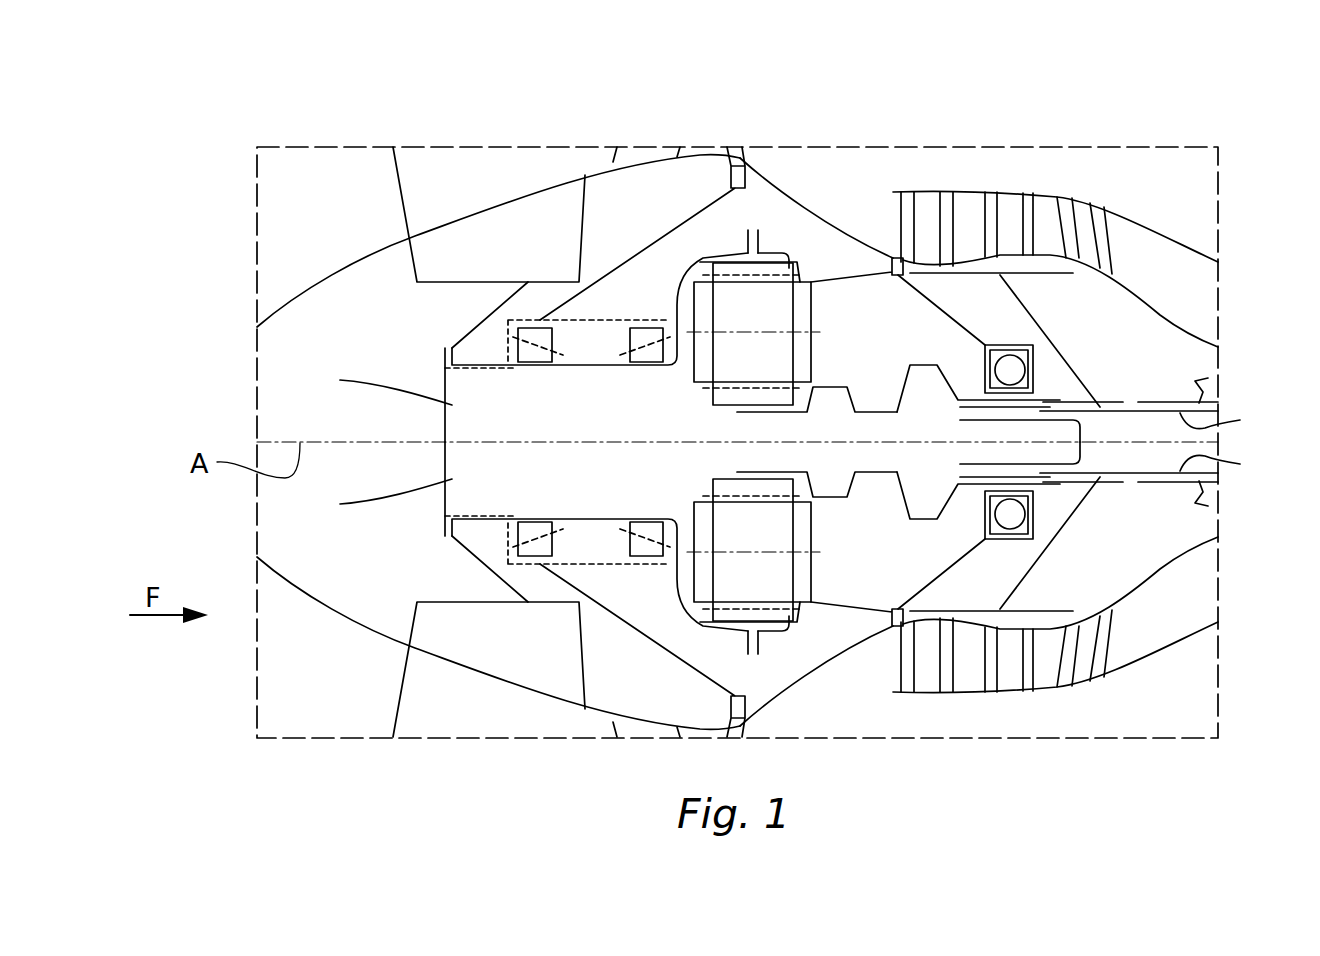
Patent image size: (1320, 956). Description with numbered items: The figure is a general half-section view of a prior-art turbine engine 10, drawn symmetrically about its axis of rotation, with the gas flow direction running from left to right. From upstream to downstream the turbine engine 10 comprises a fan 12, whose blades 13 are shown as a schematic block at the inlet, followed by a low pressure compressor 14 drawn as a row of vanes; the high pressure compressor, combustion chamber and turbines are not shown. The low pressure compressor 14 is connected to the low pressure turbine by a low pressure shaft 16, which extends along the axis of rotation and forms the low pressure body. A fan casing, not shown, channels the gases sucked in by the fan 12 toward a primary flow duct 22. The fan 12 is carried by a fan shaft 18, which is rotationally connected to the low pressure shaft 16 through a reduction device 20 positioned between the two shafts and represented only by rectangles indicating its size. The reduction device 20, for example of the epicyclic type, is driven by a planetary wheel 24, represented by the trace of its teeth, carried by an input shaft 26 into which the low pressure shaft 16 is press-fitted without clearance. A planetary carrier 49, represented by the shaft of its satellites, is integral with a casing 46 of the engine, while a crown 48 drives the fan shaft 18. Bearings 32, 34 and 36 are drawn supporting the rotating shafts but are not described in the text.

The turbine engine 10 is at (310, 100).
The fan 12 is at (430, 165).
The blades 13 is at (482, 170).
The low pressure compressor 14 is at (1005, 212).
The low pressure shaft 16 is at (1218, 412).
The fan shaft 18 is at (340, 380).
The reduction device 20 is at (770, 297).
The primary flow duct 22 is at (850, 188).
The planetary wheel 24 is at (770, 388).
The input shaft 26 is at (950, 397).
The first bearing 32 is at (537, 333).
The second bearing 34 is at (648, 333).
The turbine bearing 36 is at (1013, 372).
The casing 46 is at (855, 275).
The crown 48 is at (735, 250).
The planetary carrier 49 is at (760, 333).